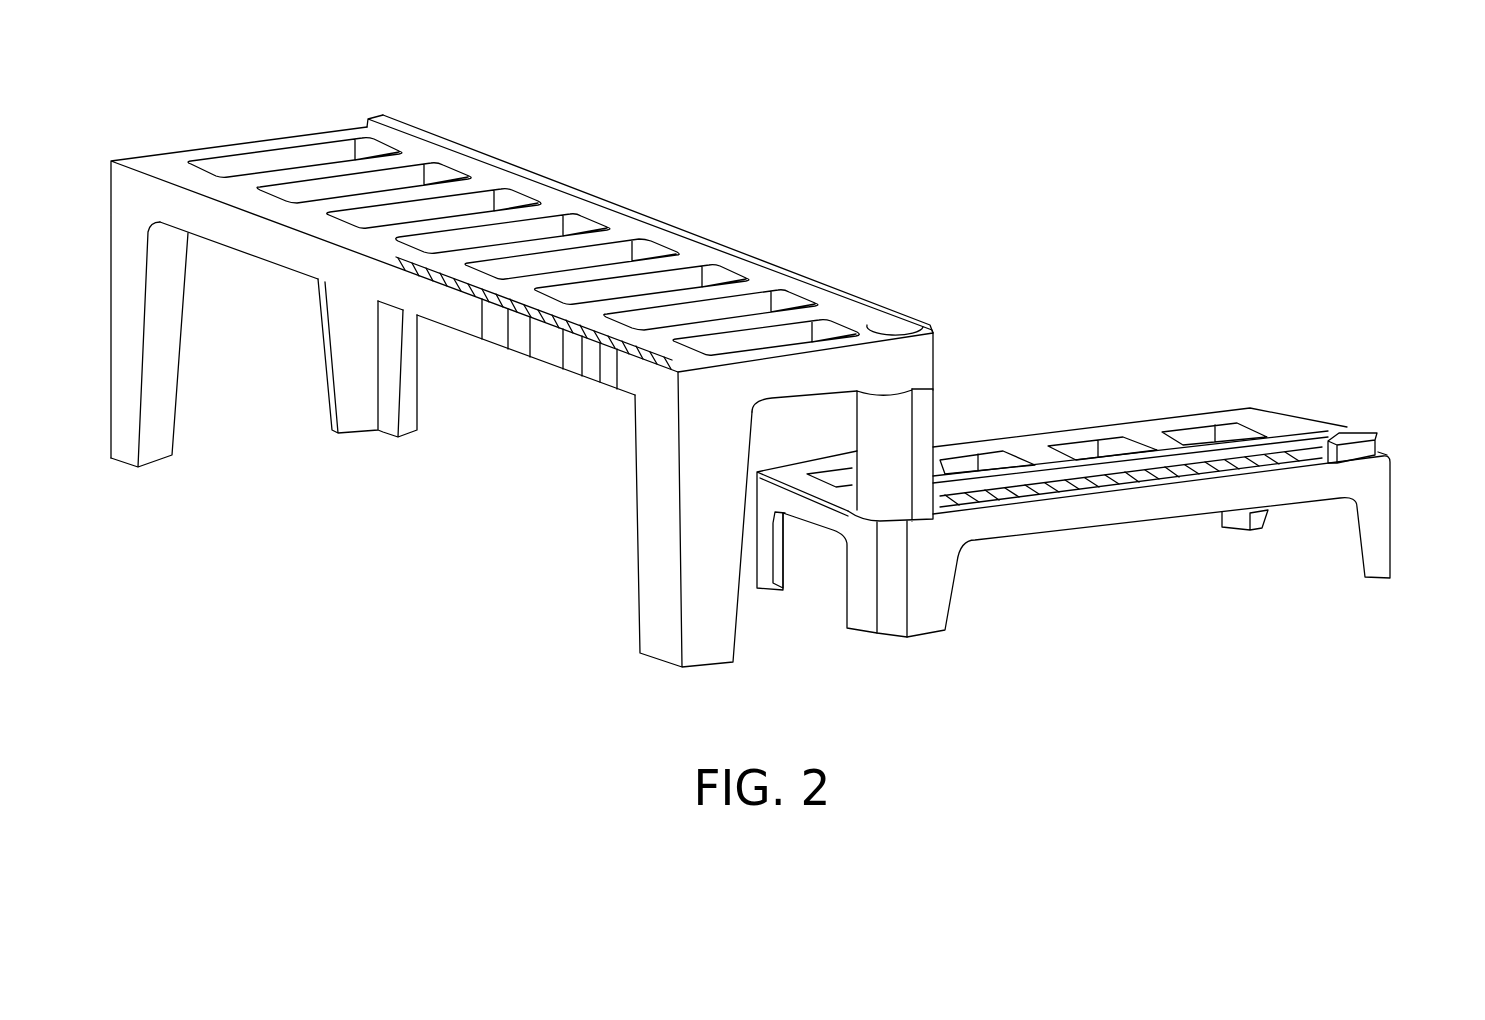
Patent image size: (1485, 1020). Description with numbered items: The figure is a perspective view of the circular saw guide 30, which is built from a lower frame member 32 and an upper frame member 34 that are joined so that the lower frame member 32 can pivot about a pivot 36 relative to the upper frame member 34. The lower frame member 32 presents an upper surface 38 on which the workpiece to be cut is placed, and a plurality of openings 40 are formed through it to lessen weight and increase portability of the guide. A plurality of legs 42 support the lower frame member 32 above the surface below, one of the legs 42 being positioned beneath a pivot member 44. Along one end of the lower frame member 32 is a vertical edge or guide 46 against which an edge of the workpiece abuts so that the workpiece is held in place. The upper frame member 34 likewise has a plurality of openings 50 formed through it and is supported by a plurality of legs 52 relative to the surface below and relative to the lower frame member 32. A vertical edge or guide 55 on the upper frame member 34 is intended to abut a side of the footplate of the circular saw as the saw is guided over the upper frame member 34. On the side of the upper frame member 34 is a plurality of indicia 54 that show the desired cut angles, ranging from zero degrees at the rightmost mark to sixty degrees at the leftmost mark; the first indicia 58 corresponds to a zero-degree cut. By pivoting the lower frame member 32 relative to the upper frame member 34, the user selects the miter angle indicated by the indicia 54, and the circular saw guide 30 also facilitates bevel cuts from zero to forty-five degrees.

The circular saw guide 30 is at (893, 182).
The lower frame member 32 is at (1396, 498).
The upper frame member 34 is at (445, 140).
The pivot 36 is at (898, 282).
The upper surface 38 is at (1245, 410).
The openings 40 is at (962, 462).
The legs 42 is at (768, 580).
The pivot member 44 is at (855, 422).
The vertical edge or guide 46 is at (1333, 430).
The openings 50 is at (300, 156).
The legs 52 is at (137, 466).
The indicia 54 is at (430, 340).
The vertical edge or guide 55 is at (678, 215).
The first indicia 58 is at (187, 157).